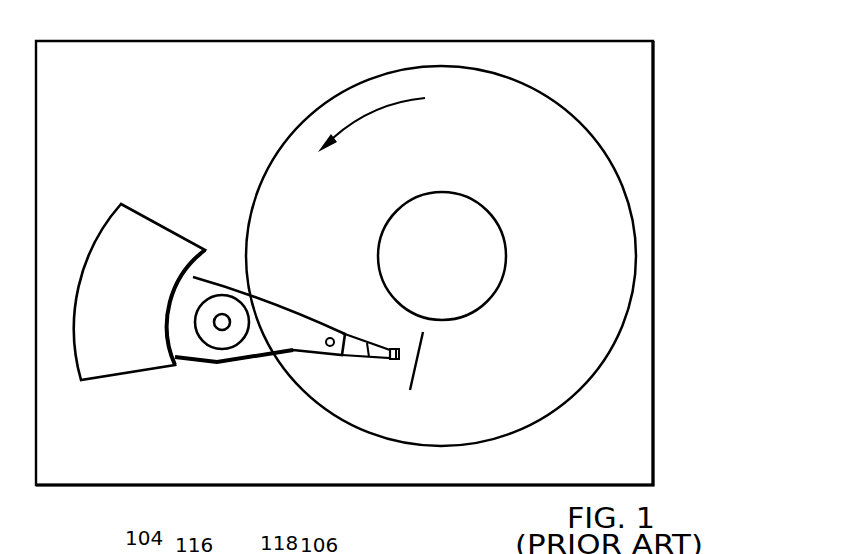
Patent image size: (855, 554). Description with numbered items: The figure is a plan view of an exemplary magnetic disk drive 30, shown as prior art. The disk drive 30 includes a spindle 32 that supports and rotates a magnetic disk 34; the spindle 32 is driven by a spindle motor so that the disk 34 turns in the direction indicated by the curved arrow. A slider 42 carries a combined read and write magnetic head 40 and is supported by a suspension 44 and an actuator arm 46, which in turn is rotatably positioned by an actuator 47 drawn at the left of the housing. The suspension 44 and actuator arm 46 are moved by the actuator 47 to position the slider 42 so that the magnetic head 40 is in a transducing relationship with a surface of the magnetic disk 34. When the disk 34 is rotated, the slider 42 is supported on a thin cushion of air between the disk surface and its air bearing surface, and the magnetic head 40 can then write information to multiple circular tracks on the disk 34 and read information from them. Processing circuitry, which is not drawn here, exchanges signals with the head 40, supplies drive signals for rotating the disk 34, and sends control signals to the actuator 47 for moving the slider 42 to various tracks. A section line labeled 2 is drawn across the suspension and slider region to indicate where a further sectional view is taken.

The disk drive 30 is at (672, 45).
The hub 32 is at (466, 192).
The magnetic disk 34 is at (563, 256).
The head 40 is at (397, 356).
The slider 42 is at (396, 348).
The suspension 44 is at (353, 359).
The actuator arm 46 is at (268, 298).
The voice coil motor 47 is at (157, 223).
The section line 2- 2 is at (436, 345).